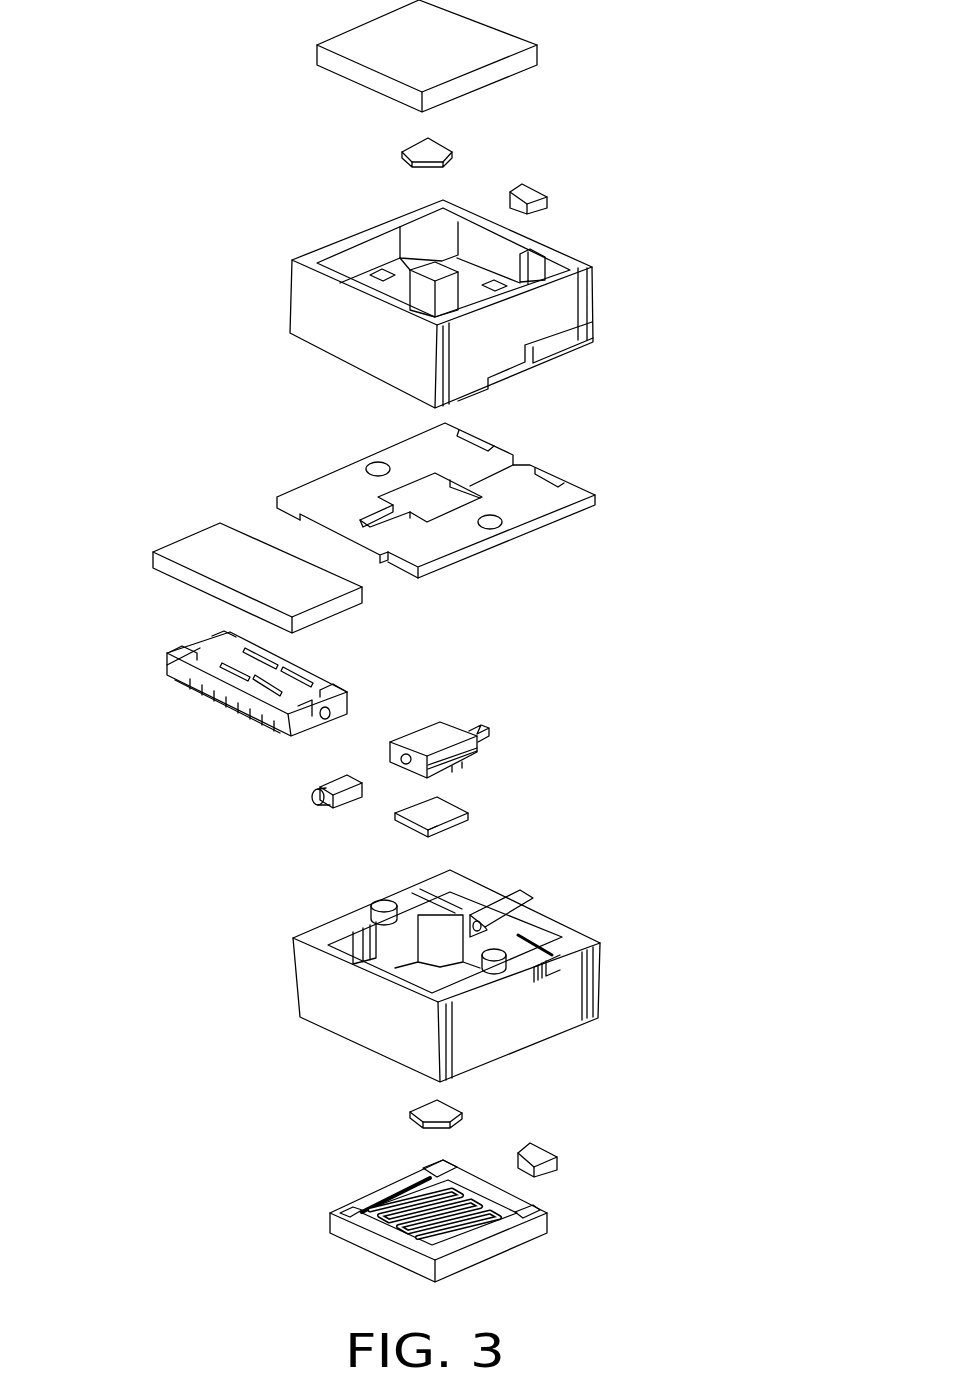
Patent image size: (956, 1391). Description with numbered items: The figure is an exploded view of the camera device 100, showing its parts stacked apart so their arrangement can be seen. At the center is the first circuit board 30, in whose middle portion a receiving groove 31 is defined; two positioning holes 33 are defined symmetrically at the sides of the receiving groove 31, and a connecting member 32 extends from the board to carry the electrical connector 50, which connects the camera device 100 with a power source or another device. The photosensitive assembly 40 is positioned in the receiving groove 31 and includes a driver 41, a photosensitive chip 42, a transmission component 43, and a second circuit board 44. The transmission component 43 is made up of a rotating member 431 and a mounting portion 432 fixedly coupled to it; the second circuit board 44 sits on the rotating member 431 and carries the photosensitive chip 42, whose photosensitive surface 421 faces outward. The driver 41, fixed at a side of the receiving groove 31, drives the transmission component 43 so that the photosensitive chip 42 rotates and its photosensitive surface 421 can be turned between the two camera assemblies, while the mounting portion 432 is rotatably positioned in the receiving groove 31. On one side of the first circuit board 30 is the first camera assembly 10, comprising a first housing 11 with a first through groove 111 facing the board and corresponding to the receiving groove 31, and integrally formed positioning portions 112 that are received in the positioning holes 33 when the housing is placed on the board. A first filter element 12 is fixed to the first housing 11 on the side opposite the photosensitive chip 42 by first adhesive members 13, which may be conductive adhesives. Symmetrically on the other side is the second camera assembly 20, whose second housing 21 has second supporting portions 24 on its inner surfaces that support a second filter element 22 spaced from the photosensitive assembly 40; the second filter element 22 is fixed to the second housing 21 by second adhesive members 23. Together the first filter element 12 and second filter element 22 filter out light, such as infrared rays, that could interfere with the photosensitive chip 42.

The camera device 100 is at (148, 43).
The first camera assembly 10 is at (655, 1100).
The first housing 11 is at (543, 1015).
The first through groove 111 is at (400, 948).
The positioning portion 112 is at (497, 950).
The first filter element 12 is at (537, 1232).
The first adhesive member 13 is at (532, 1157).
The second camera assembly 20 is at (652, 122).
The second housing 21 is at (547, 290).
The second filter element 22 is at (513, 65).
The second adhesive member 23 is at (528, 193).
The second supporting portion 24 is at (398, 268).
The first circuit board 30 is at (313, 495).
The receiving groove 31 is at (430, 498).
The connecting member 32 is at (285, 540).
The positioning hole 33 is at (377, 465).
The photosensitive assembly 40 is at (233, 805).
The driver 41 is at (318, 785).
The photosensitive chip 42 is at (415, 815).
The photosensitive surface 421 is at (455, 828).
The transmission component 43 is at (595, 717).
The rotating member 431 is at (477, 745).
The mounting portion 432 is at (480, 740).
The second circuit board 44 is at (442, 735).
The electrical connector 50 is at (187, 548).